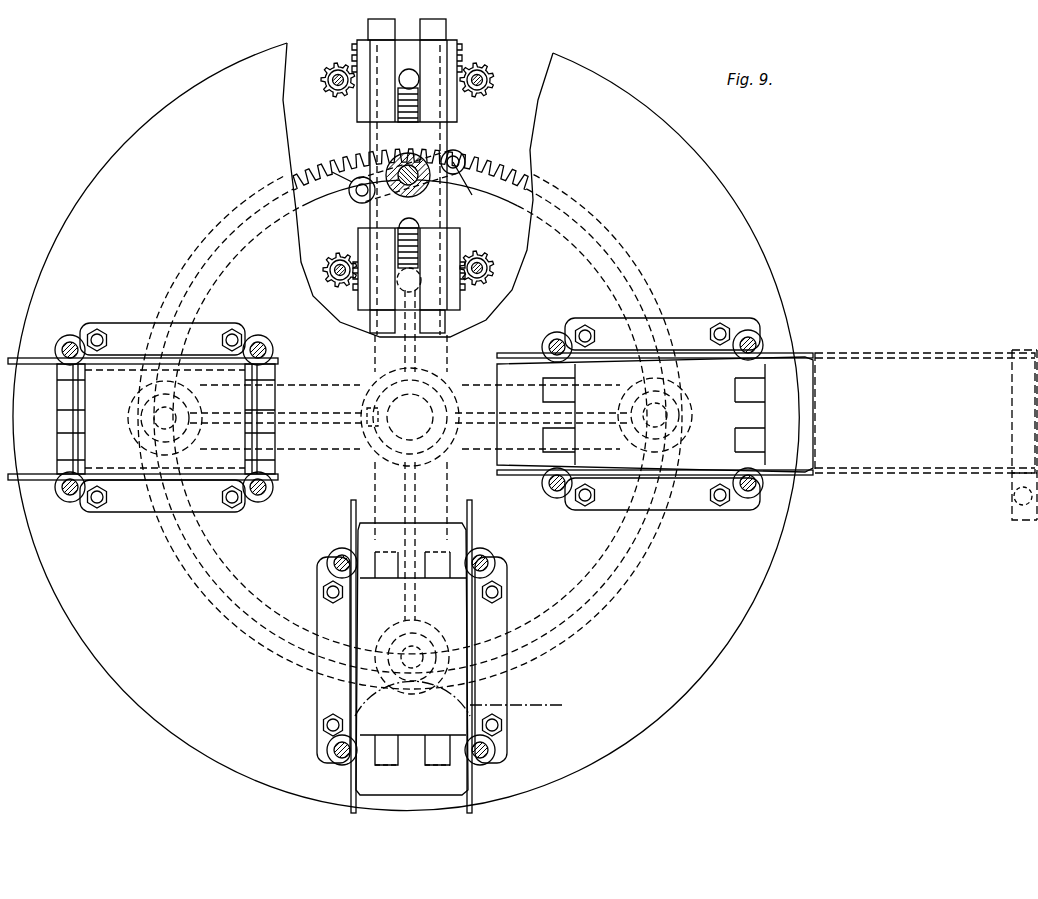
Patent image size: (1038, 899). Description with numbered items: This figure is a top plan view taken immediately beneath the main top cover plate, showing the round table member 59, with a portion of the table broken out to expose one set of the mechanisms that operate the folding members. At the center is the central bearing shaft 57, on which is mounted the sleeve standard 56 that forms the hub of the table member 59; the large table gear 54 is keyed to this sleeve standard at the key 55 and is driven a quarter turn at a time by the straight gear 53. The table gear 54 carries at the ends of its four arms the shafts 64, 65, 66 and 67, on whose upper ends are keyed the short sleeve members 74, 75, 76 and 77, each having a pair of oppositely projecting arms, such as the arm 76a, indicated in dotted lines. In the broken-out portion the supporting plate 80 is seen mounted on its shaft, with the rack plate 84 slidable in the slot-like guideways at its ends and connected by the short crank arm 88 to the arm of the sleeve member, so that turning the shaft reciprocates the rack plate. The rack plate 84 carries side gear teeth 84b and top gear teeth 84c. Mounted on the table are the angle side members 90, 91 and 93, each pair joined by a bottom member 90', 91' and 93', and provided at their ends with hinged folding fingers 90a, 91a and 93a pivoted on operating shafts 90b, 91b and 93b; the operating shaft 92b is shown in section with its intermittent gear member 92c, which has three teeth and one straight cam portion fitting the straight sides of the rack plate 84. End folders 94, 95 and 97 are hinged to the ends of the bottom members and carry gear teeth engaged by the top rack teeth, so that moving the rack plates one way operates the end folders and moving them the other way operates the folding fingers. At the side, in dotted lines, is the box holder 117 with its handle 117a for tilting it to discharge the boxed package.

The straight gear 53 is at (471, 698).
The table gear 54 is at (522, 182).
The key 55 is at (372, 428).
The sleeve standard 56 is at (392, 400).
The central bearing shaft 57 is at (418, 427).
The round table member 59 is at (727, 240).
The shaft 64 is at (431, 648).
The shaft 65 is at (150, 412).
The shaft 66 is at (410, 164).
The shaft 67 is at (663, 408).
The sleeve member 74 is at (395, 650).
The sleeve member 75 is at (145, 428).
The sleeve member 76 is at (400, 168).
The projecting arm 76a is at (350, 170).
The sleeve member 77 is at (668, 418).
The supporting plate 80 is at (430, 147).
The rack plate 84 is at (438, 105).
The side gear teeth 84b is at (356, 53).
The top gear teeth 84c is at (402, 100).
The crank arm 88 is at (462, 160).
The angle side member 90 is at (409, 660).
The bottom member 90' is at (366, 587).
The folding finger 90a is at (352, 522).
The operating shaft 90b is at (330, 563).
The angle side member 91 is at (162, 419).
The bottom member 91' is at (165, 453).
The folding finger 91a is at (42, 358).
The operating shaft 91b is at (72, 343).
The operating shaft 92b is at (328, 80).
The intermittent gear member 92c is at (332, 72).
The angle side member 93 is at (662, 416).
The bottom member 93' is at (579, 347).
The folding finger 93a is at (520, 354).
The operating shaft 93b is at (557, 342).
The end folder 94 is at (437, 540).
The end folder 95 is at (73, 418).
The end folder 97 is at (508, 383).
The box holder 117 is at (926, 435).
The handle 117a is at (1013, 496).